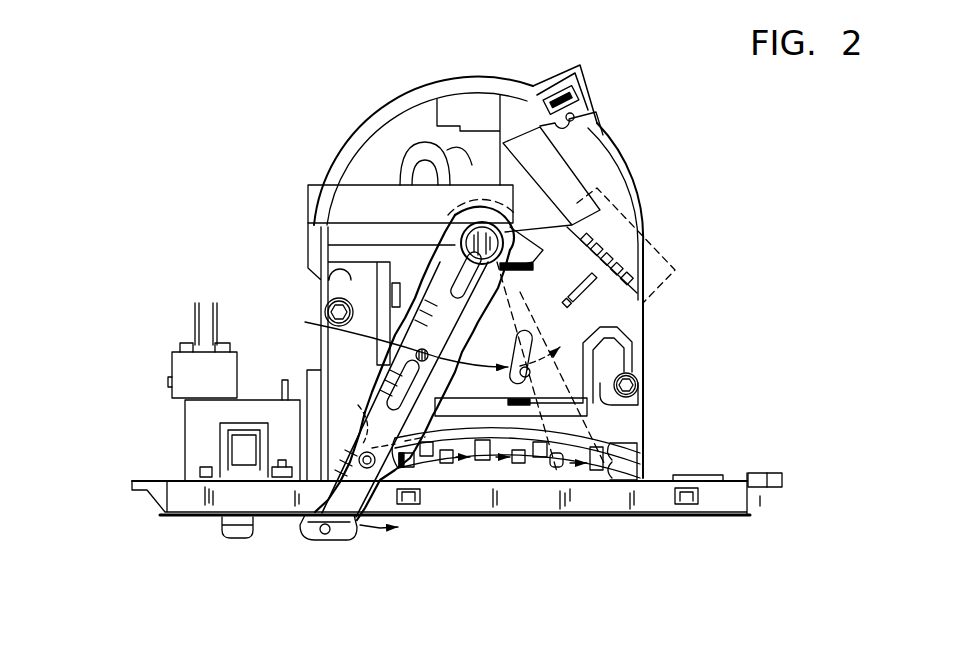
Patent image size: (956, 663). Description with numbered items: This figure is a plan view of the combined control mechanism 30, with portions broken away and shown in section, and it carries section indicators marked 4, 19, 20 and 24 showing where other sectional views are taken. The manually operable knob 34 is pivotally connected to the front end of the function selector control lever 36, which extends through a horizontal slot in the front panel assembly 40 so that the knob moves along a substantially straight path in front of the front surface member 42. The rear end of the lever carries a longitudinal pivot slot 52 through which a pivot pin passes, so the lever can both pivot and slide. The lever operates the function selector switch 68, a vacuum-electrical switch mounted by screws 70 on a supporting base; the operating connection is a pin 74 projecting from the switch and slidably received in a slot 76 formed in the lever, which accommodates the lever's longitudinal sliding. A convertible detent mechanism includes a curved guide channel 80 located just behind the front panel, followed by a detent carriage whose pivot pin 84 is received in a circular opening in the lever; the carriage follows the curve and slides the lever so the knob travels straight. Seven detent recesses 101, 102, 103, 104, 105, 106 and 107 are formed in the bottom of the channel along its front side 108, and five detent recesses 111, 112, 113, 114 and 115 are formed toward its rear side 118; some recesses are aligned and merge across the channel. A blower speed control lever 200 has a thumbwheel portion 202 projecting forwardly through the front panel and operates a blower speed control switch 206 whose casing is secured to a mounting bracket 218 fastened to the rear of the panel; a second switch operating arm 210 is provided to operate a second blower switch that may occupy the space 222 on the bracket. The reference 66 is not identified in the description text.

The section line 4- 4 is at (427, 72).
The section line 19- 19 is at (202, 345).
The section line 20- 20 is at (212, 243).
The section line 24- 24 is at (53, 340).
The combined control mechanism 30 is at (768, 530).
The manually operable knob 34 is at (307, 530).
The function selector control lever 36 is at (385, 412).
The front panel assembly 40 is at (730, 500).
The front surface member 42 is at (760, 654).
The longitudinal pivot slot 52 is at (400, 228).
The cover 66 is at (510, 217).
The function selector switch 68 is at (382, 195).
The screws 70 is at (345, 302).
The pin 74 is at (483, 328).
The slot 76 is at (448, 250).
The guide channel 80 is at (645, 468).
The pivot pin 84 is at (347, 452).
The detent recess 101 is at (400, 463).
The detent recess 102 is at (440, 460).
The detent recess 103 is at (476, 462).
The detent recess 104 is at (500, 460).
The detent recess 105 is at (555, 465).
The detent recess 106 is at (548, 466).
The detent recess 107 is at (597, 470).
The front side 108 is at (620, 478).
The detent recess 111 is at (245, 402).
The detent recess 112 is at (511, 396).
The detent recess 113 is at (482, 359).
The detent recess 114 is at (533, 446).
The detent recess 115 is at (622, 460).
The rear side 118 is at (640, 462).
The blower speed control lever 200 is at (222, 535).
The thumbwheel portion 202 is at (236, 540).
The blower speed control switch 206 is at (173, 377).
The switch operating arm 210 is at (280, 399).
The mounting bracket 218 is at (193, 437).
The space 222 is at (253, 398).